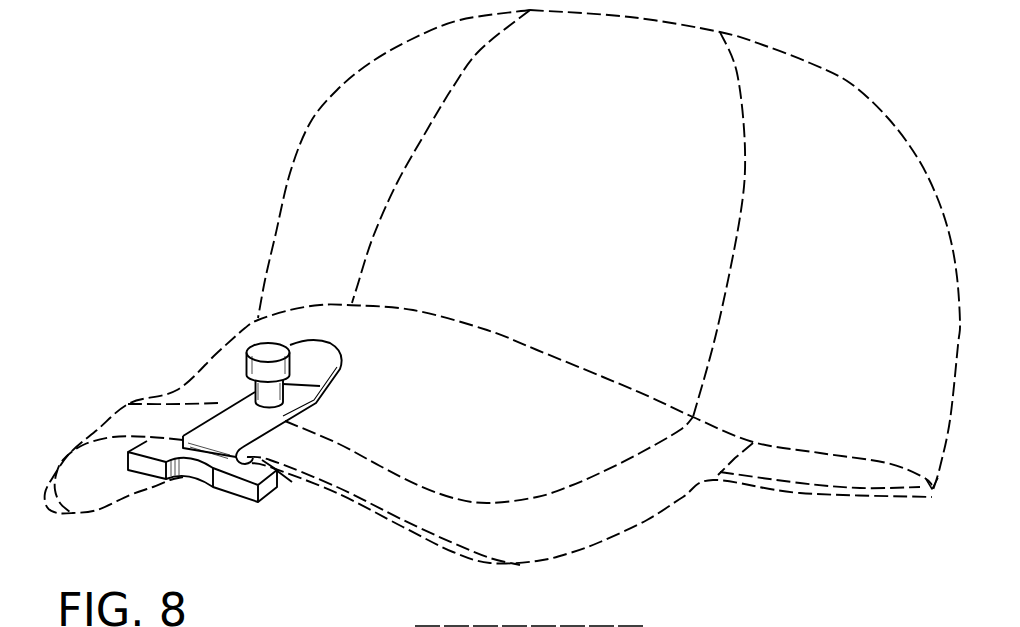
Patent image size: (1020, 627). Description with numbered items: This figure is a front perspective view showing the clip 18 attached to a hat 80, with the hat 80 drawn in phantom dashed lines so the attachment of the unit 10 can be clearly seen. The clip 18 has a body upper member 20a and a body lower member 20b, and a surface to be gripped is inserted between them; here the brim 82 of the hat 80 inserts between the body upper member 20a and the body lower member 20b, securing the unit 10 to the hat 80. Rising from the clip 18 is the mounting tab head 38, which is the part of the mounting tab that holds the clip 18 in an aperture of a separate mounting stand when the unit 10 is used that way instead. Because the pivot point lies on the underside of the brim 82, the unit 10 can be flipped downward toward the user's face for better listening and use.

The unit 10 is at (218, 422).
The clip 18 is at (205, 400).
The body upper member 20a is at (222, 421).
The body lower member 20b is at (270, 464).
The mounting tab head 38 is at (247, 352).
The hat 80 is at (876, 61).
The brim 82 is at (623, 512).